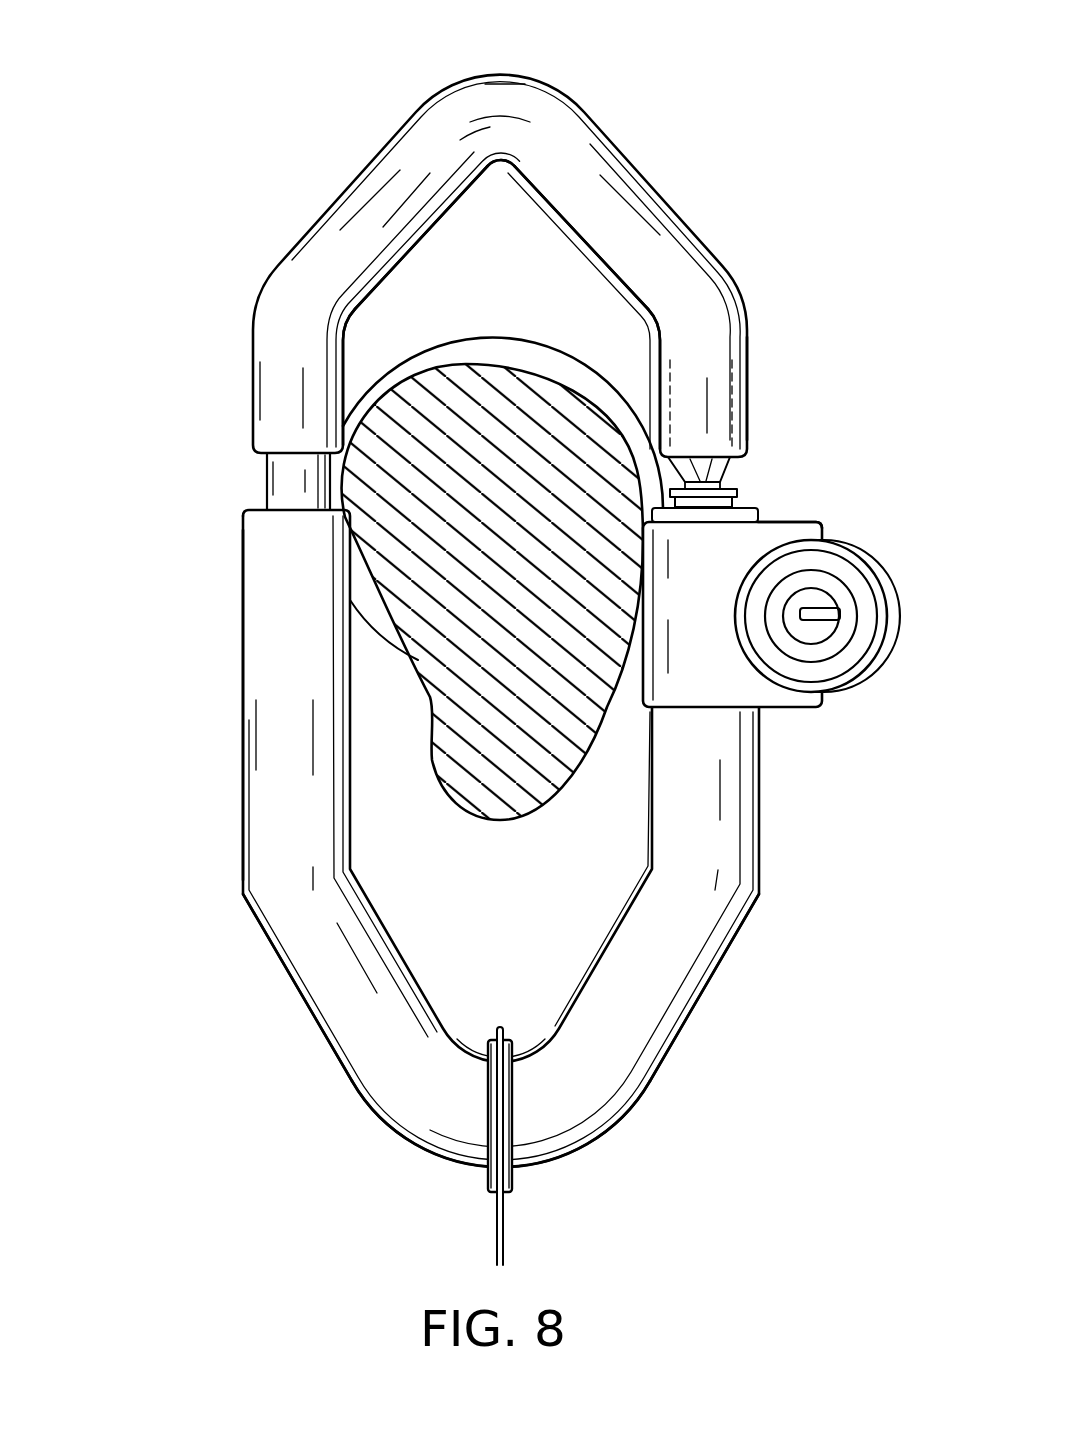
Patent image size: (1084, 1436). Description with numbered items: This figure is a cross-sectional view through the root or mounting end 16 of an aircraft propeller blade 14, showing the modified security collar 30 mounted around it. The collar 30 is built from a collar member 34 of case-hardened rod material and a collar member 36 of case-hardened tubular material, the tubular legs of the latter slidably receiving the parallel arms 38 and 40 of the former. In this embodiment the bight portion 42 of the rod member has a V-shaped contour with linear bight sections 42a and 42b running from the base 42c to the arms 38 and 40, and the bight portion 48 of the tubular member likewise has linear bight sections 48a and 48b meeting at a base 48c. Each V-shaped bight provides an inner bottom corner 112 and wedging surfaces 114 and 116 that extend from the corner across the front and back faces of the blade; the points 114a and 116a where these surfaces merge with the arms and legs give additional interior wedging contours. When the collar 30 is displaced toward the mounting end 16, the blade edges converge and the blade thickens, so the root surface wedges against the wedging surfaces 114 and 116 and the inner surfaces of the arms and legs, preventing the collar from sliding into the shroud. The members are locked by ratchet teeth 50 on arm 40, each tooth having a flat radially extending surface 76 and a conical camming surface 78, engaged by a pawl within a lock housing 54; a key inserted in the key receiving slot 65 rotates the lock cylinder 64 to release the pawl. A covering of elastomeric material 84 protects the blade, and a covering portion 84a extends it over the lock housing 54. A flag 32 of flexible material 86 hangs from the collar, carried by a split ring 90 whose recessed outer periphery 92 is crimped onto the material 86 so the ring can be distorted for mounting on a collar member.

The propeller blade 14 is at (427, 758).
The mounting end 16 is at (500, 362).
The collar 30 is at (188, 652).
The flag 32 is at (506, 1148).
The collar member 34 is at (626, 150).
The collar member 36 is at (351, 1101).
The arm 38 is at (280, 474).
The arm 40 is at (730, 390).
The bight portion 42 is at (482, 107).
The bight section 42a is at (390, 193).
The bight section 42b is at (637, 207).
The base of bight portion 42c is at (528, 113).
The bight portion 48 is at (597, 1083).
The bight section 48a is at (343, 1008).
The bight section 48b is at (667, 998).
The base of bight portion 48c is at (567, 1153).
The ratchet teeth 50 is at (747, 481).
The lock housing 54 is at (869, 549).
The lock cylinder 64 is at (845, 645).
The key receiving slot 65 is at (827, 607).
The radially extending surface 76 is at (732, 455).
The conical camming surface 78 is at (732, 500).
The covering of elastomeric material 84 is at (700, 243).
The covering portion 84a is at (815, 524).
The flexible material 86 is at (496, 1233).
The split ring 90 is at (488, 1135).
The outer periphery 92 is at (488, 1180).
The inner bottom corner 112 is at (497, 167).
The wedging surface 114 is at (563, 223).
The point 114a is at (653, 337).
The wedging surface 116 is at (403, 258).
The point 116a is at (345, 333).